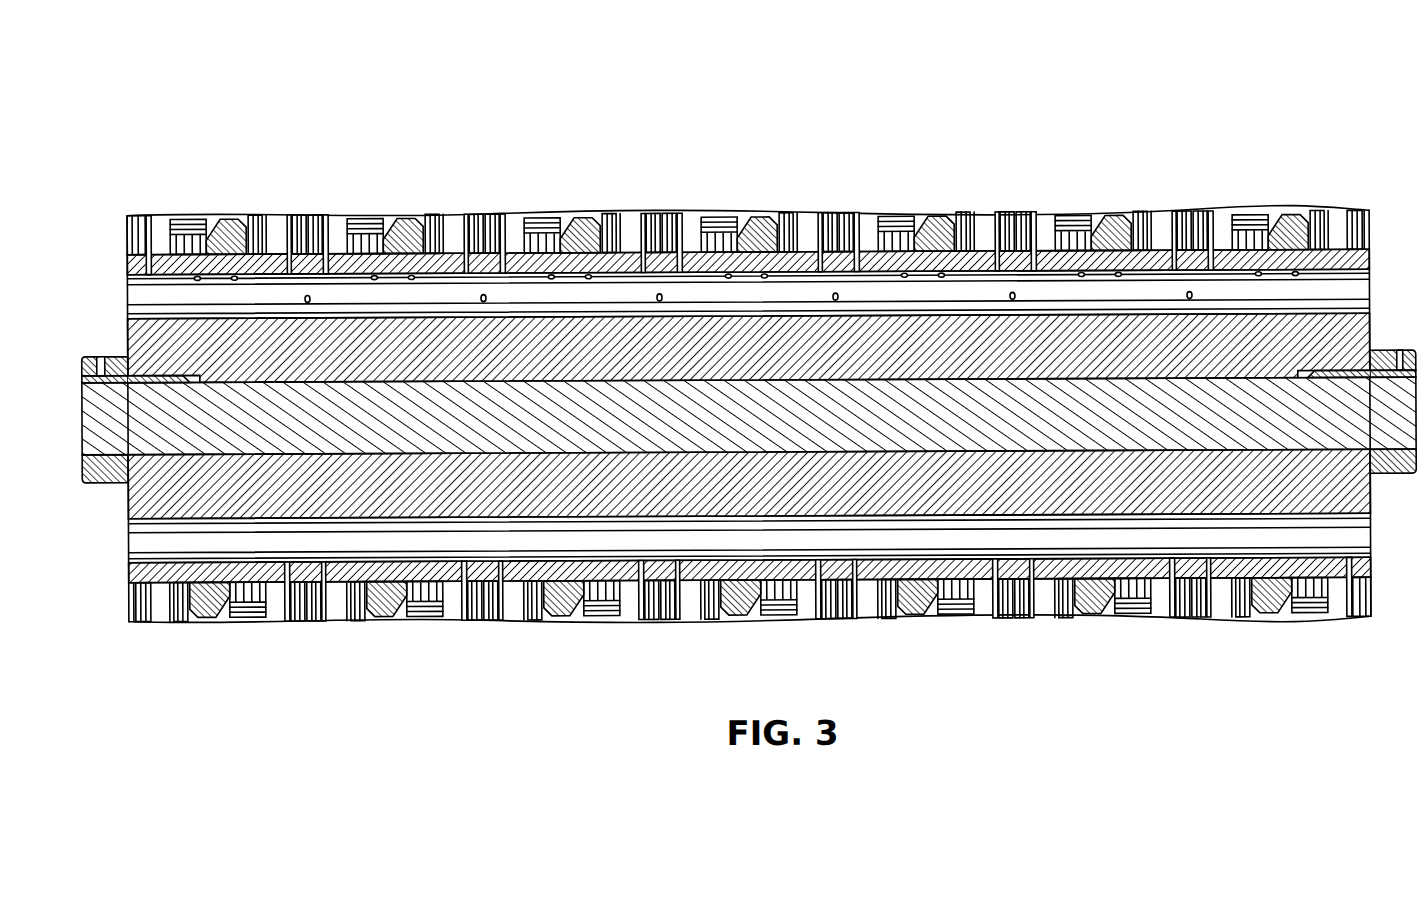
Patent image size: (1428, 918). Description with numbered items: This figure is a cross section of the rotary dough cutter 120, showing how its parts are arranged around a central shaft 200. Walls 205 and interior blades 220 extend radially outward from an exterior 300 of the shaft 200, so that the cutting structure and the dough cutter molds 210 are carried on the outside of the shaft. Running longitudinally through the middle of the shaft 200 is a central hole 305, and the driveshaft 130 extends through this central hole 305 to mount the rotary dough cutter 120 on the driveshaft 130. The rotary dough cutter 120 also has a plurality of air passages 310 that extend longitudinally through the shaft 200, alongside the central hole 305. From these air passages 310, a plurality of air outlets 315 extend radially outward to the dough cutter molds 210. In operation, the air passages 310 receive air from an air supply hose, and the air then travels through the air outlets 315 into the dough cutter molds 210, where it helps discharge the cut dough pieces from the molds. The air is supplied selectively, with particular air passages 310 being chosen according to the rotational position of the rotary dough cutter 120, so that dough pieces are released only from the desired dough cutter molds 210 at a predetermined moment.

The rotary dough cutter 120 is at (818, 90).
The driveshaft 130 is at (751, 418).
The shaft 200 is at (140, 260).
The walls 205 is at (265, 226).
The dough cutter molds 210 is at (445, 245).
The interior blades 220 is at (593, 220).
The exterior of shaft 300 is at (1150, 245).
The central hole 305 is at (1310, 380).
The air passages 310 is at (1320, 278).
The air outlets 315 is at (838, 294).